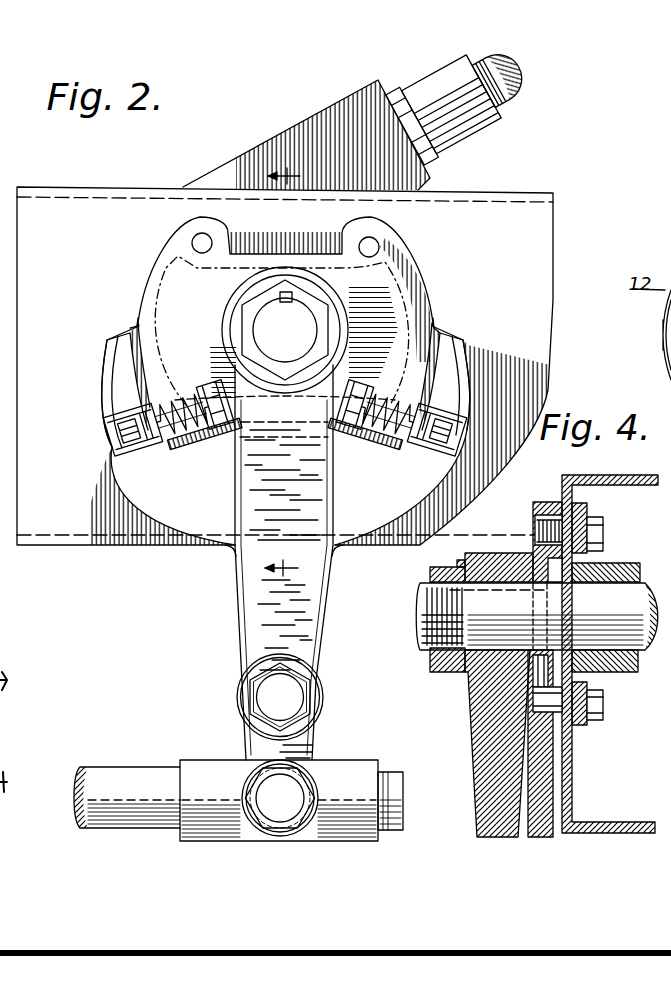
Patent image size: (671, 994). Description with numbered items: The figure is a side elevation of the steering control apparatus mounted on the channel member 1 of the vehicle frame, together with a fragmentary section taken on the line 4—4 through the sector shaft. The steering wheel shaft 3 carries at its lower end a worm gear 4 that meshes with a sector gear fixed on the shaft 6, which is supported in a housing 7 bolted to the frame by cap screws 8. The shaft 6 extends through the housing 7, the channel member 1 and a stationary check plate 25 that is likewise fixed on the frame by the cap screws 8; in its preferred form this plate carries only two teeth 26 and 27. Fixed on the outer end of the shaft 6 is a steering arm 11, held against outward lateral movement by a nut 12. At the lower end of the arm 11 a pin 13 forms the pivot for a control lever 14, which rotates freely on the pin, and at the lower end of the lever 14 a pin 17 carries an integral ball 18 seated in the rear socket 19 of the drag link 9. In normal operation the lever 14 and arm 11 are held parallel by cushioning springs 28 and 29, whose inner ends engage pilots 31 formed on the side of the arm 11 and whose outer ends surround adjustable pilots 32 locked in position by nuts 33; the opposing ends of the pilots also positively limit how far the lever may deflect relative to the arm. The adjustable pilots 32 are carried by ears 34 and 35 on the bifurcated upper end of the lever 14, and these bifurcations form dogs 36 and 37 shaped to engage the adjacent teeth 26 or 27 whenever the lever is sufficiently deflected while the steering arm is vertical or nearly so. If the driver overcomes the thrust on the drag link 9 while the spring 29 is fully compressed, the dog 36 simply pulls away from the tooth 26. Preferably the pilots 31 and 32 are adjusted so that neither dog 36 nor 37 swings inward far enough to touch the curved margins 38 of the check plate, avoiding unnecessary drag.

In FIG. 2, the channel member 1 is at (540, 210).
In FIG. 2, the shaft 3 is at (515, 82).
In FIG. 2, the worm gear 4 is at (282, 372).
In FIG. 2, the shaft 6 is at (268, 312).
In FIG. 4, the shaft 6 is at (643, 597).
In FIG. 4, the housing 7 is at (630, 672).
In FIG. 2, the cap screws 8 is at (207, 241).
In FIG. 4, the cap screws 8 is at (603, 532).
In FIG. 2, the drag link 9 is at (130, 777).
In FIG. 2, the steering arm 11 is at (314, 618).
In FIG. 4, the steering arm 11 is at (485, 753).
In FIG. 2, the nut 12 is at (268, 300).
In FIG. 4, the nut 12 is at (436, 662).
In FIG. 2, the pin 13 is at (292, 697).
In FIG. 4, the pin 13 is at (670, 698).
In FIG. 2, the control lever 14 is at (317, 741).
In FIG. 4, the control lever 14 is at (548, 787).
In FIG. 2, the pin 17 is at (274, 789).
In FIG. 2, the ball 18 is at (320, 786).
In FIG. 2, the rear socket 19 is at (192, 767).
In FIG. 2, the stationary plate 25 is at (420, 280).
In FIG. 4, the stationary plate 25 is at (533, 511).
In FIG. 2, the tooth 26 is at (434, 331).
In FIG. 2, the tooth 27 is at (141, 326).
In FIG. 2, the cushioning spring 28 is at (190, 440).
In FIG. 2, the cushioning spring 29 is at (372, 437).
In FIG. 2, the pilots 31 is at (237, 399).
In FIG. 2, the adjustable pilots 32 is at (450, 445).
In FIG. 2, the nuts 33 is at (420, 447).
In FIG. 2, the ear 34 is at (437, 403).
In FIG. 2, the ear 35 is at (123, 414).
In FIG. 2, the dog 36 is at (448, 350).
In FIG. 2, the dog 37 is at (118, 347).
In FIG. 4, the dog 37 is at (557, 627).
In FIG. 2, the curved margins 38 is at (424, 366).